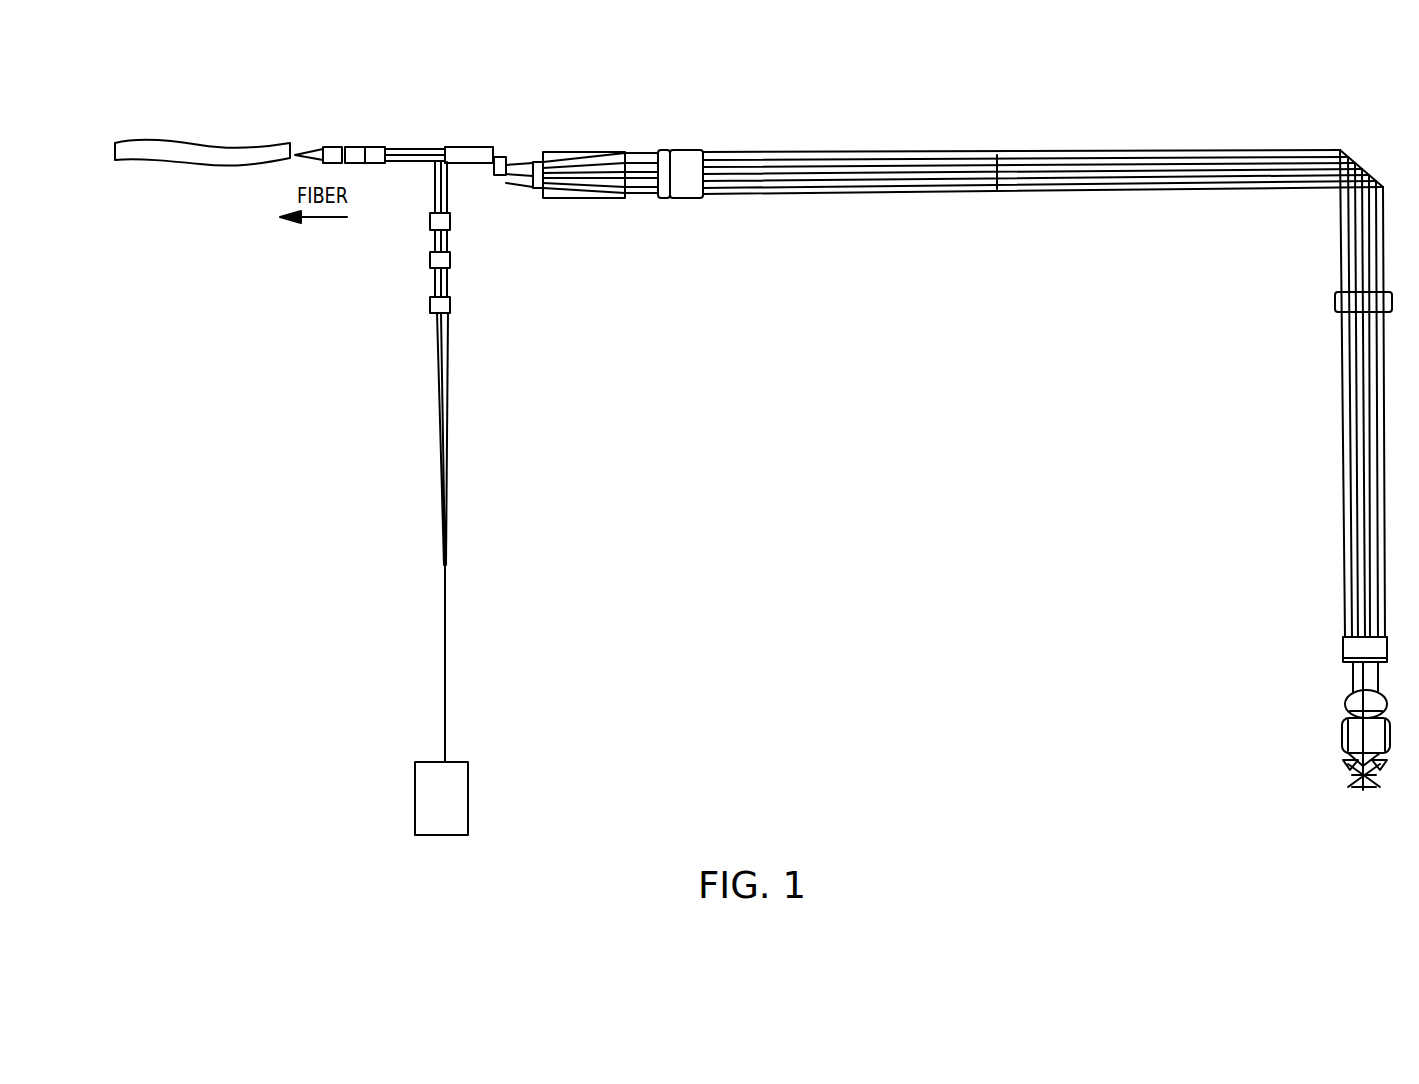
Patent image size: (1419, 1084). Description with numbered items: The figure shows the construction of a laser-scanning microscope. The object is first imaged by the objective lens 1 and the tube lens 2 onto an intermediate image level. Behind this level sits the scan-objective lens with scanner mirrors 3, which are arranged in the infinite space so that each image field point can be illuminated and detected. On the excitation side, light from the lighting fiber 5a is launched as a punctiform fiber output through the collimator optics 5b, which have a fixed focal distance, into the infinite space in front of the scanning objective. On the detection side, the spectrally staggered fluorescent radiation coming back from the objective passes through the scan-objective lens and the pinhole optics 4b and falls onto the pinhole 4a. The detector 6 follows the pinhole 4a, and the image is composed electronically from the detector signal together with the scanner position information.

The objective lens 1 is at (1327, 637).
The tube lens 2 is at (1333, 303).
The scan-objective lens with scanner mirrors 3 is at (682, 150).
The pinhole 4a is at (445, 760).
The pinhole optics 4b is at (465, 210).
The lighting fiber 5a is at (218, 146).
The collimator optics 5b is at (372, 146).
The detector 6 is at (413, 810).